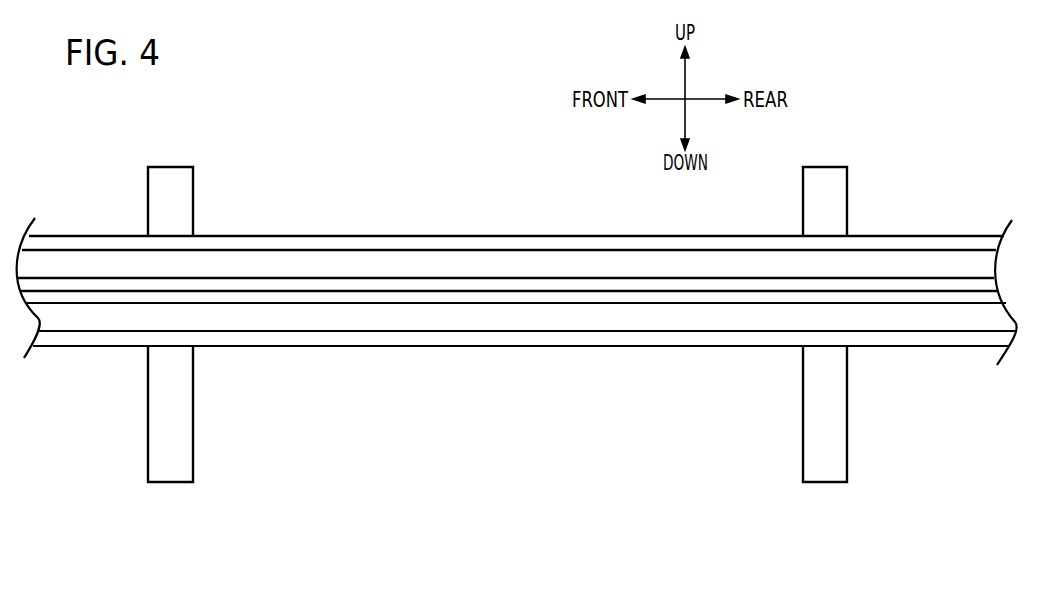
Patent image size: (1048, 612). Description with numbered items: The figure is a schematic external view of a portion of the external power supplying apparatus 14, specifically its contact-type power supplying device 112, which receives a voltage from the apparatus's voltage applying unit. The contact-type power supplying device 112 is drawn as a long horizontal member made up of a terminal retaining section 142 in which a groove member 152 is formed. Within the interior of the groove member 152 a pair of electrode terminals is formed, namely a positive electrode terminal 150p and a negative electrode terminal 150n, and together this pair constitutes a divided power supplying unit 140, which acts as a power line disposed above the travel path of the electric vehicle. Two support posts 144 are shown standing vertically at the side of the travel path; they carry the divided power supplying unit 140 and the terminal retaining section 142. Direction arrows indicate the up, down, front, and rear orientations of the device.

The external power supplying apparatus 14 is at (472, 118).
The contact-type power supplying device 112 is at (289, 213).
The terminal retaining section 142 is at (604, 243).
The support post 144 is at (173, 175).
The positive electrode terminal 150p is at (587, 265).
The negative electrode terminal 150n is at (633, 317).
The groove member 152 is at (369, 297).
The divided power supplying unit 140 is at (670, 388).